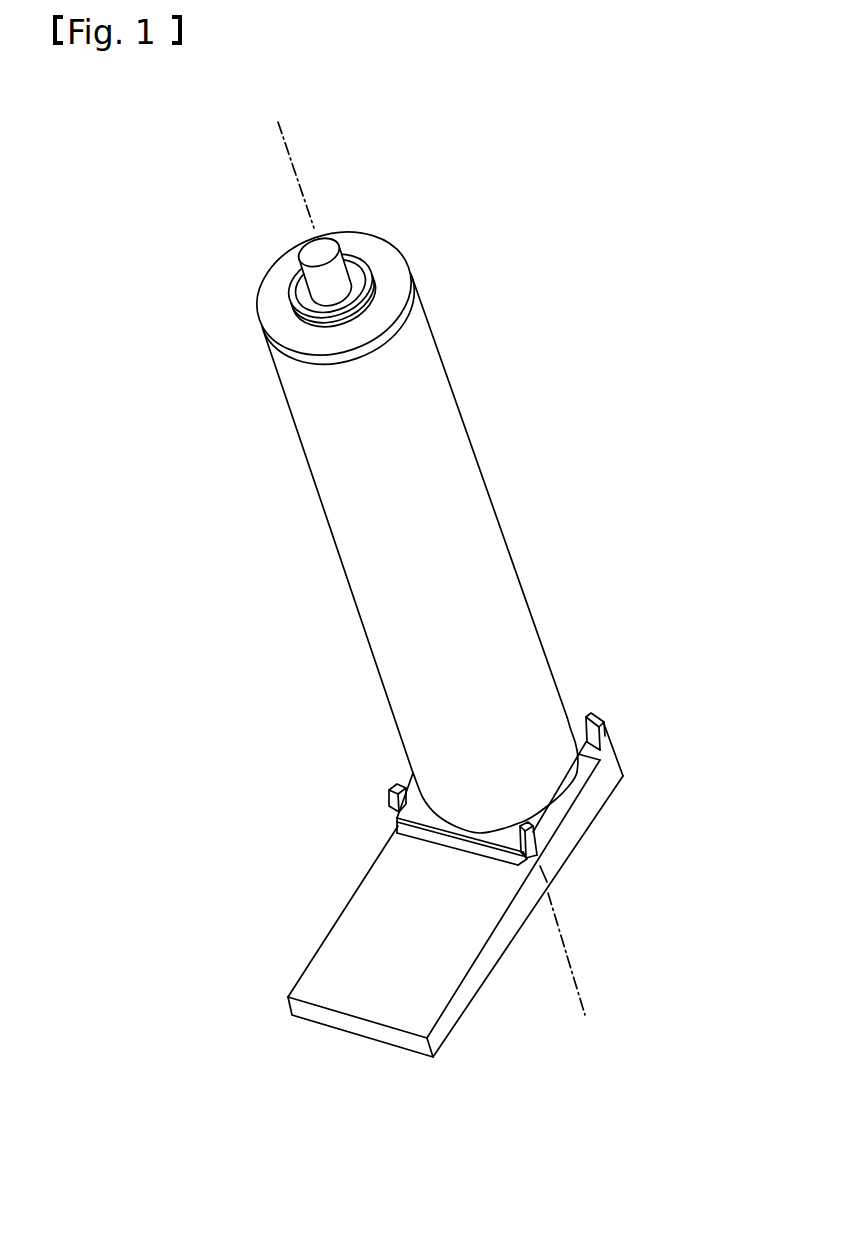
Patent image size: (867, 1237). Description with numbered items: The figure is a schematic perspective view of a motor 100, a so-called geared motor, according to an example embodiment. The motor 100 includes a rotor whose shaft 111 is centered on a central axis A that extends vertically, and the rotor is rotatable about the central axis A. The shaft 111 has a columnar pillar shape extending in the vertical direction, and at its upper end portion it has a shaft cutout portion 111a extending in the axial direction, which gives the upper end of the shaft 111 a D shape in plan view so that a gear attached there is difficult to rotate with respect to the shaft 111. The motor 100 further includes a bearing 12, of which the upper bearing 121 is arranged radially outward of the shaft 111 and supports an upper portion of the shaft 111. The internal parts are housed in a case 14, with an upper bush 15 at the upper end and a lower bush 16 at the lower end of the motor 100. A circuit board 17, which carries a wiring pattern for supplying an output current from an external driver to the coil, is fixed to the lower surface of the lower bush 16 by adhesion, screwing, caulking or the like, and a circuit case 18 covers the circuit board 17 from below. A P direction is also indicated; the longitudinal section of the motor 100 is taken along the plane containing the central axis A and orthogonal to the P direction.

The motor 100 is at (458, 212).
The case 14 is at (468, 443).
The upper bush 15 is at (296, 340).
The shaft 111 is at (312, 290).
The shaft cutout portion 111a is at (341, 246).
The upper bearing 121 is at (372, 278).
The bearing 12 is at (421, 285).
The lower bush 16 is at (415, 817).
The circuit board 17 is at (357, 915).
The circuit case 18 is at (582, 812).
The central axis A is at (563, 952).
The P direction P is at (276, 117).